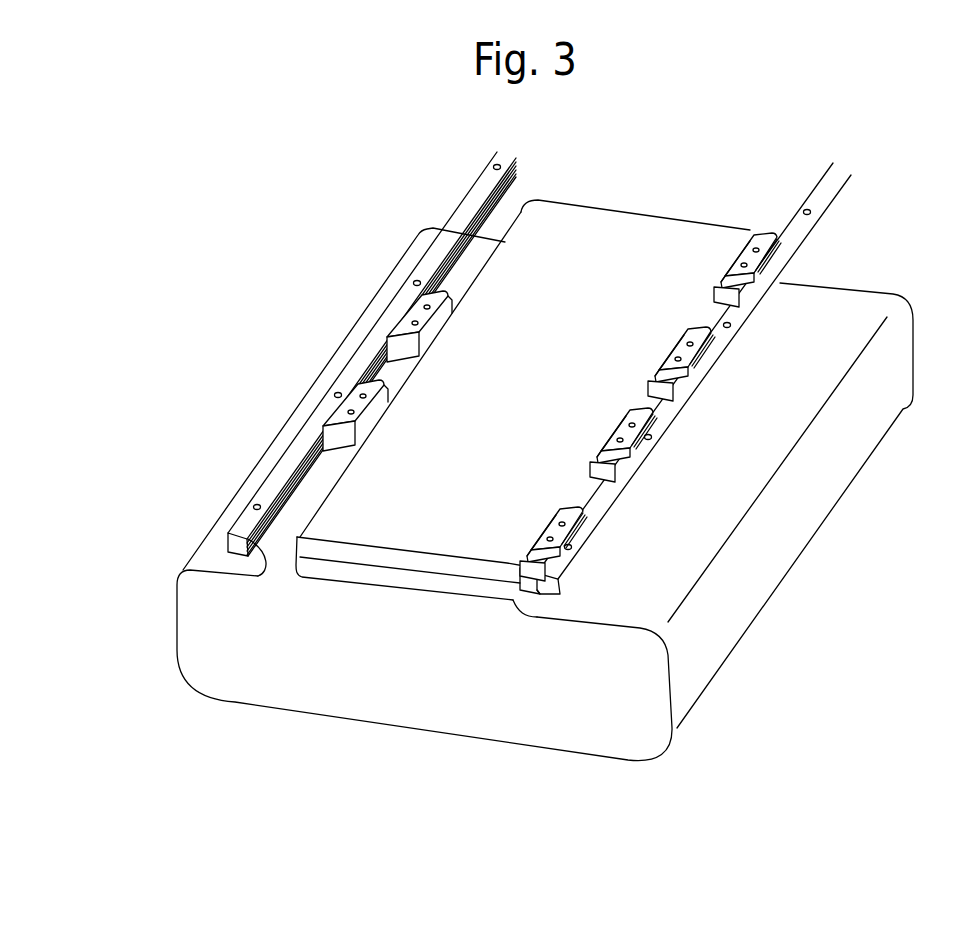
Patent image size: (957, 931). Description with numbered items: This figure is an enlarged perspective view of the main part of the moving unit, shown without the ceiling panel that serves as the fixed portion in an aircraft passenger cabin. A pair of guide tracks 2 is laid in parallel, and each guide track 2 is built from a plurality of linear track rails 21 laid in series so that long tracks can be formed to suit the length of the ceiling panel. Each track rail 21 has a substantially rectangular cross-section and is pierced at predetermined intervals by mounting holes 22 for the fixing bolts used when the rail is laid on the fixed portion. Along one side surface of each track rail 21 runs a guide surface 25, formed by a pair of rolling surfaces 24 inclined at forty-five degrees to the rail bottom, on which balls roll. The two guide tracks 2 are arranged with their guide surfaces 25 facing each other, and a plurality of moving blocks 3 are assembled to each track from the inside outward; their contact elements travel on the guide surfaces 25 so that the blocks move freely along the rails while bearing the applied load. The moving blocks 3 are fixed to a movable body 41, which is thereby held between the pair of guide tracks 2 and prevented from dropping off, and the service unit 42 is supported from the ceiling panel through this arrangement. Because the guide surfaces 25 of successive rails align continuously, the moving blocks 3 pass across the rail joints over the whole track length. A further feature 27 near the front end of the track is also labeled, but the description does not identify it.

The guide track 2 is at (586, 373).
The track rail 21 is at (478, 183).
The mounting hole 22 is at (415, 281).
The moving block 3 is at (432, 312).
The rolling surface 24 is at (363, 358).
The guide surface 25 is at (297, 468).
The recess 27 is at (260, 578).
The movable body 41 is at (667, 243).
The service unit 42 is at (815, 510).